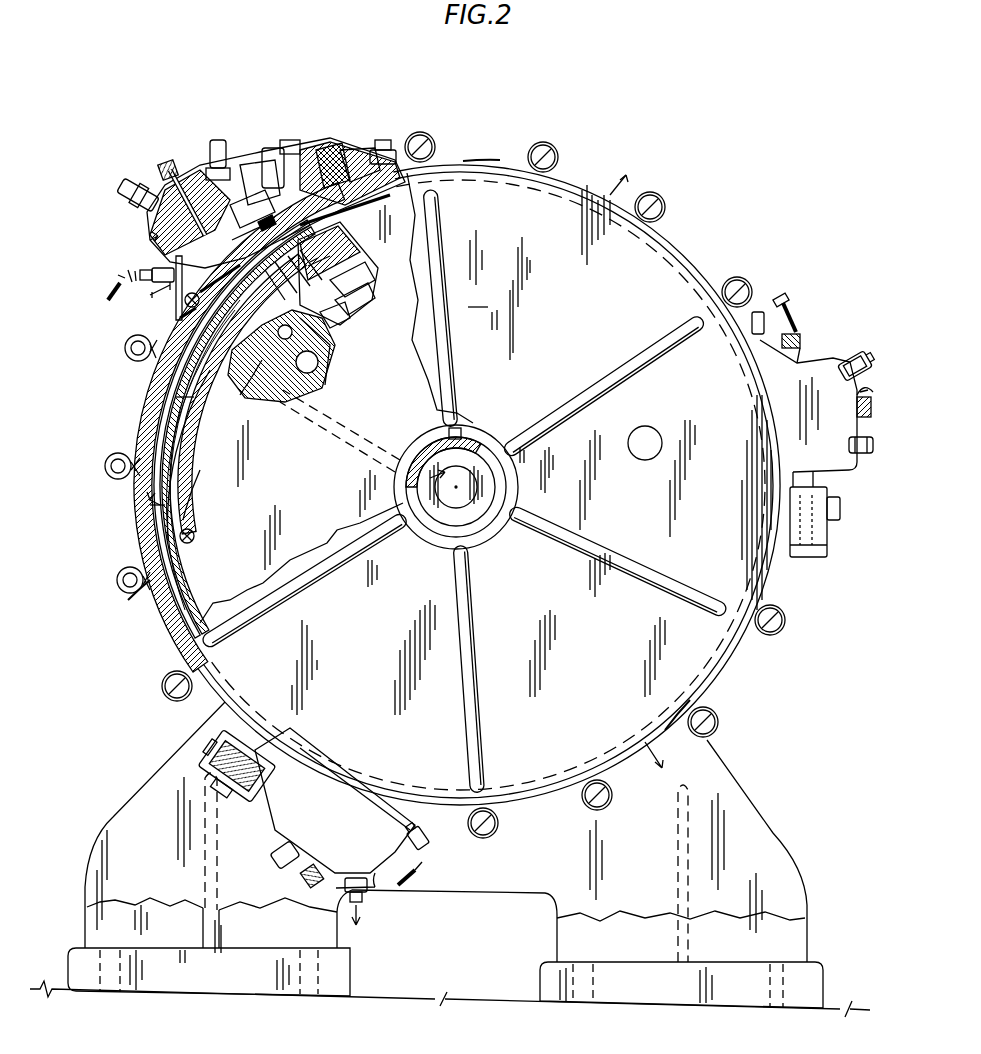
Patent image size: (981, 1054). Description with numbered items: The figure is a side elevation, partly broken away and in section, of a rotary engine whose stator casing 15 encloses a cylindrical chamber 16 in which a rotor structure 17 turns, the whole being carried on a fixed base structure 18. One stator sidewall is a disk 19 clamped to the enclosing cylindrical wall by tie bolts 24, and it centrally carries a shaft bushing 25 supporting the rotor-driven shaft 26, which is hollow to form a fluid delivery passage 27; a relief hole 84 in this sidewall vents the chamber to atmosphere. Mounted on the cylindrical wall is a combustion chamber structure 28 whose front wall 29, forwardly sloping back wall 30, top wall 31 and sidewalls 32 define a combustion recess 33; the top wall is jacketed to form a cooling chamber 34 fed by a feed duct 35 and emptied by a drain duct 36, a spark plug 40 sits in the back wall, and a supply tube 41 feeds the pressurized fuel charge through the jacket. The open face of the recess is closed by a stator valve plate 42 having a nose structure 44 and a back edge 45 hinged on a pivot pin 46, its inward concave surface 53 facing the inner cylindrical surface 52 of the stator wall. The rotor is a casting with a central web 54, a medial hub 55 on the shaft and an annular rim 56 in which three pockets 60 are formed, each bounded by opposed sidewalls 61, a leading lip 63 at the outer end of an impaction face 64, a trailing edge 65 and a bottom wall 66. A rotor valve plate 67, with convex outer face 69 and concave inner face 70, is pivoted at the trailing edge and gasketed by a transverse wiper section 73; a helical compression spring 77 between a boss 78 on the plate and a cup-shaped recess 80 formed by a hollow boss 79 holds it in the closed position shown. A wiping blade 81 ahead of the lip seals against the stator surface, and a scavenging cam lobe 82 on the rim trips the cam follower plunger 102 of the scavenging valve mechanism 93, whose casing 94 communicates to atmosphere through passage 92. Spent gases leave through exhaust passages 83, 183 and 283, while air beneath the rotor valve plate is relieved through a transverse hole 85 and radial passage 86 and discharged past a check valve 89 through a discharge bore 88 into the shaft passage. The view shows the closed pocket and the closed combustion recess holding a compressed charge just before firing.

The stator casing 15 is at (575, 180).
The cylindrical chamber 16 is at (148, 496).
The rotor structure 17 is at (160, 525).
The base structure 18 is at (766, 812).
The sidewall disk 19 is at (478, 298).
The tie bolts 24 is at (432, 150).
The shaft bushing 25 is at (432, 527).
The rotor-driven shaft 26 is at (468, 512).
The fluid delivery passage 27 is at (470, 466).
The combustion chamber structure 28 is at (148, 242).
The front wall 29 is at (252, 182).
The forwardly sloping back wall 30 is at (140, 272).
The top wall 31 is at (195, 178).
The sidewalls 32 is at (190, 260).
The combustion recess 33 is at (165, 292).
The cooling chamber 34 is at (158, 216).
The feed duct 35 is at (218, 142).
The drain duct 36 is at (136, 193).
The spark plug 40 is at (126, 282).
The supply tube 41 is at (160, 165).
The stator valve plate 42 is at (242, 223).
The nose structure 44 is at (255, 221).
The transverse back edge 45 is at (192, 316).
The pivot pin 46 is at (198, 305).
The inner cylindrical surface 52 is at (168, 615).
The inward concave surface 53 is at (230, 290).
The central web 54 is at (158, 548).
The medial hub 55 is at (432, 478).
The annular rim 56 is at (384, 150).
The rotor pocket 60 is at (150, 420).
The pocket sidewalls 61 is at (189, 455).
The leading transverse edge 63 is at (310, 262).
The leading impaction face 64 is at (340, 232).
The trailing transverse edge 65 is at (193, 533).
The bottom wall 66 is at (196, 440).
The rotor valve plate 67 is at (152, 380).
The outer face 69 is at (152, 400).
The inner face 70 is at (182, 458).
The transverse wiper section 73 is at (246, 236).
The helical compression spring 77 is at (350, 273).
The boss 78 is at (280, 278).
The hollow boss 79 is at (360, 300).
The cup-shaped recess 80 is at (346, 312).
The wiping blade 81 is at (320, 218).
The scavenging cam lobe 82 is at (512, 170).
The exhaust passage 83 is at (612, 190).
The relief hole 84 is at (641, 460).
The transverse hole 85 is at (300, 365).
The radial passage 86 is at (313, 352).
The discharge bore 88 is at (287, 395).
The check valve 89 is at (245, 395).
The passage 92 is at (270, 160).
The scavenging valve mechanism 93 is at (328, 148).
The casing 94 is at (345, 158).
The cam follower plunger 102 is at (288, 150).
The exhaust passage 183 is at (645, 762).
The exhaust passage 283 is at (150, 505).